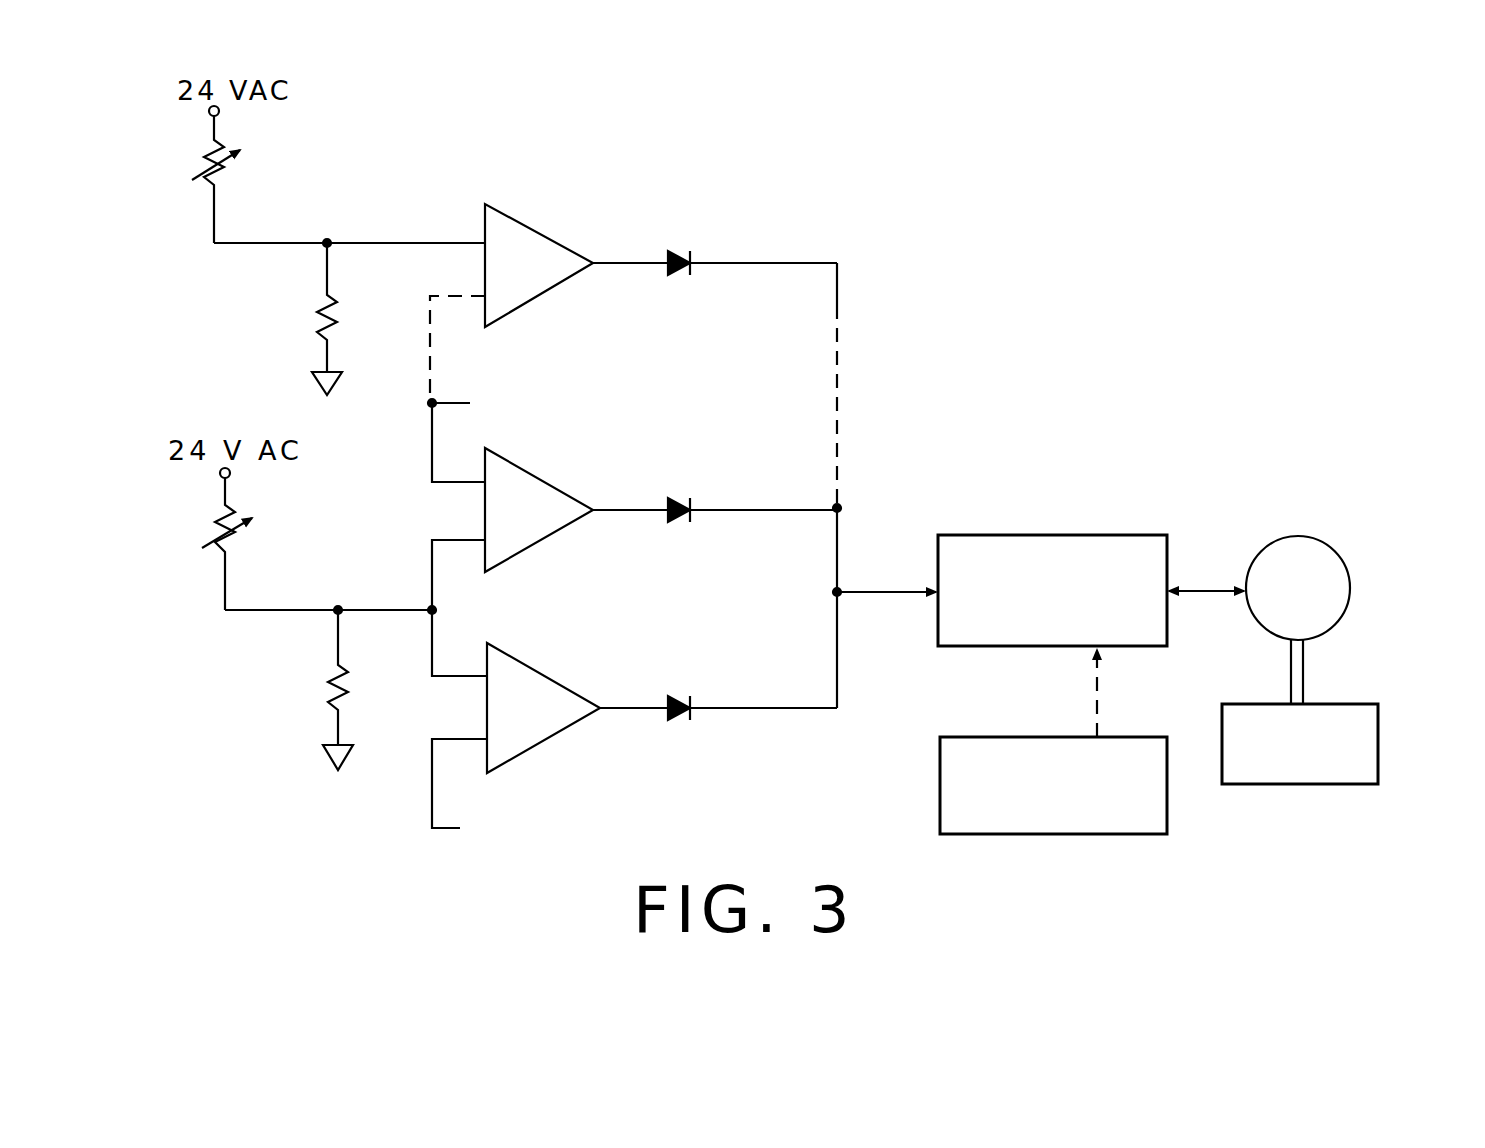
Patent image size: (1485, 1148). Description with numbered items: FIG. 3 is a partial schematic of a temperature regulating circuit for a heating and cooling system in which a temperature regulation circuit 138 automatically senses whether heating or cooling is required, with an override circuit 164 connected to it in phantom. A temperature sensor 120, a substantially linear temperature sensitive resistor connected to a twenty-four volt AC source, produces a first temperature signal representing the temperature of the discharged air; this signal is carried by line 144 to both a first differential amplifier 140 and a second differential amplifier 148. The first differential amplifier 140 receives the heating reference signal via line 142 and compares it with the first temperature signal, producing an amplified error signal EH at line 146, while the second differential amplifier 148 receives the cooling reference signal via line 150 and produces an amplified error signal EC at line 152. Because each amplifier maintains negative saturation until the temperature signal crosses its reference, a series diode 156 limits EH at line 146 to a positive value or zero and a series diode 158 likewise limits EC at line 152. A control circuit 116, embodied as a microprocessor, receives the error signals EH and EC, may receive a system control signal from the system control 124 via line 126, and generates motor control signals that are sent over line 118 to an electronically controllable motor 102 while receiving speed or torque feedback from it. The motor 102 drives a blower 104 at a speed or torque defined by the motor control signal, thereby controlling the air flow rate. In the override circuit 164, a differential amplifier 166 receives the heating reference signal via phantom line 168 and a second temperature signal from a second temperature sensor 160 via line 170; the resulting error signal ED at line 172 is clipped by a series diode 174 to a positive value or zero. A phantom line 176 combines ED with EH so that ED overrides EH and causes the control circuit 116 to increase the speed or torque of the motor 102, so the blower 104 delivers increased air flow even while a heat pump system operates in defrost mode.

The motor 102 is at (1351, 585).
The blower 104 is at (1379, 748).
The control circuit 116 is at (975, 648).
The line 118 is at (1205, 589).
The temperature sensor 120 is at (220, 555).
The system control 124 is at (940, 802).
The line 126 is at (1100, 715).
The temperature regulation circuit 138 is at (680, 427).
The first differential amplifier 140 is at (533, 470).
The line 142 is at (432, 450).
The line 144 is at (365, 610).
The line 146 is at (652, 510).
The second differential amplifier 148 is at (540, 668).
The line 150 is at (432, 805).
The line 152 is at (625, 710).
The series diode 156 is at (676, 523).
The series diode 158 is at (680, 698).
The second temperature sensor 160 is at (212, 187).
The override circuit 164 is at (547, 149).
The differential amplifier 166 is at (540, 232).
The line 168 is at (430, 347).
The line 170 is at (365, 243).
The line 172 is at (650, 262).
The diode 174 is at (676, 276).
The line 176 is at (838, 360).